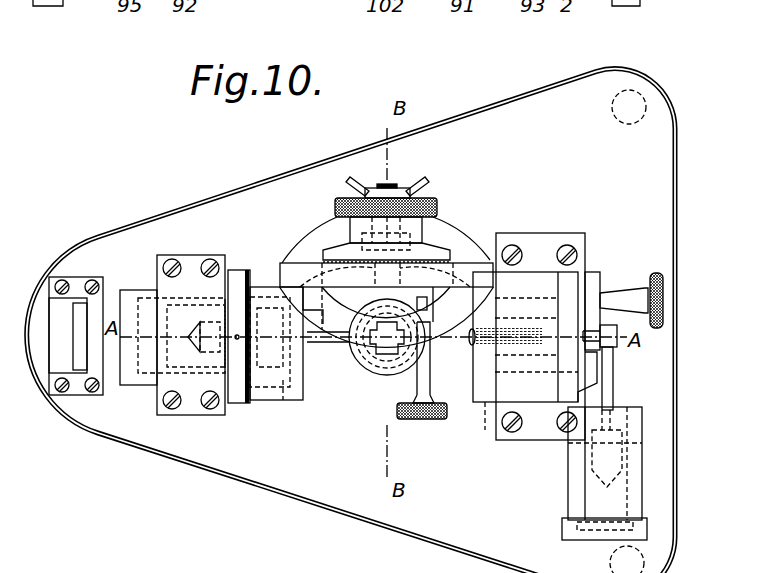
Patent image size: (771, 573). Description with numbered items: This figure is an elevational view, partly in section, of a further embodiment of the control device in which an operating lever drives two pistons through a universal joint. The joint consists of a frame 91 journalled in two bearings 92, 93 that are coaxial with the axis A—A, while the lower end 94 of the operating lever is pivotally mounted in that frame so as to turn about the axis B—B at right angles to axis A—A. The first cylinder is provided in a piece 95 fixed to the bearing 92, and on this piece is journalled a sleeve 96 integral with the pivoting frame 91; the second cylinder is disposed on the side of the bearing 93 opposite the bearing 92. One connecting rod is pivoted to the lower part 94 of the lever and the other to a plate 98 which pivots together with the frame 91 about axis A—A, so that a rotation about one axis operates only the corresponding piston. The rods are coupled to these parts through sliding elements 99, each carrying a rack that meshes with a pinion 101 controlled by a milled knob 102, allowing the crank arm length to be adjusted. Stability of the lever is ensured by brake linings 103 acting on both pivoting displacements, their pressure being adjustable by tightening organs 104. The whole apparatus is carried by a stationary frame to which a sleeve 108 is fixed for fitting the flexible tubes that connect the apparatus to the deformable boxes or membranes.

The sleeve 108 is at (80, 317).
The piece 95 is at (130, 297).
The bearing 92 is at (182, 262).
The tightening organ 104 is at (238, 276).
The sleeve 96 is at (260, 277).
The lining 103 is at (338, 253).
The frame 91 is at (296, 252).
The lower end of operating lever 94 is at (435, 297).
The pinion 101 is at (452, 265).
The milled knob 102 is at (408, 419).
The bearing 93 is at (542, 245).
The plate 98 is at (587, 280).
The sliding member 99 is at (600, 307).